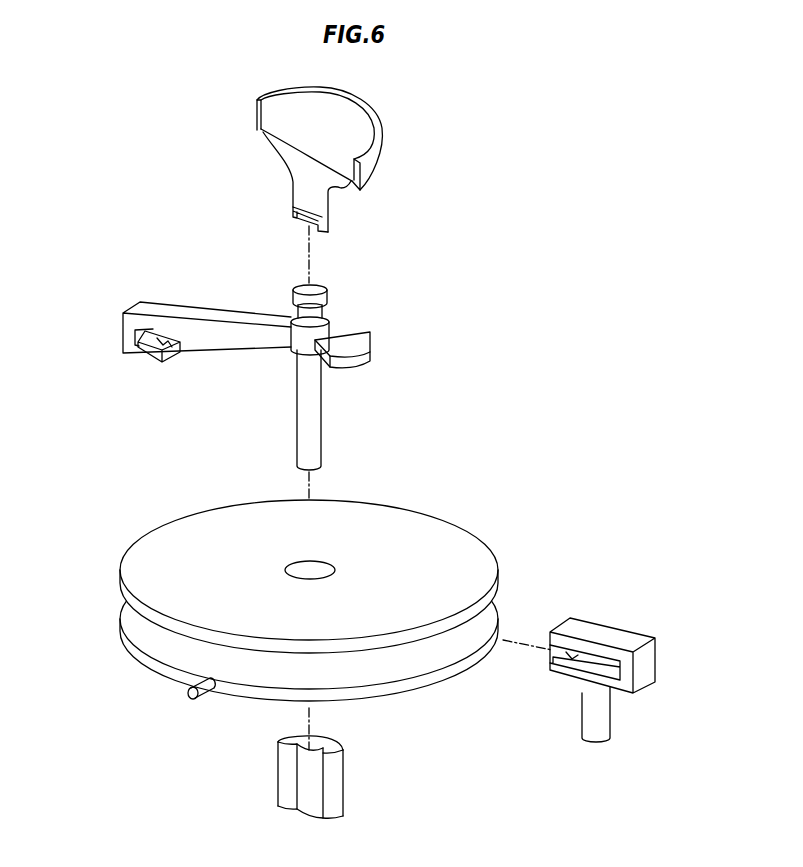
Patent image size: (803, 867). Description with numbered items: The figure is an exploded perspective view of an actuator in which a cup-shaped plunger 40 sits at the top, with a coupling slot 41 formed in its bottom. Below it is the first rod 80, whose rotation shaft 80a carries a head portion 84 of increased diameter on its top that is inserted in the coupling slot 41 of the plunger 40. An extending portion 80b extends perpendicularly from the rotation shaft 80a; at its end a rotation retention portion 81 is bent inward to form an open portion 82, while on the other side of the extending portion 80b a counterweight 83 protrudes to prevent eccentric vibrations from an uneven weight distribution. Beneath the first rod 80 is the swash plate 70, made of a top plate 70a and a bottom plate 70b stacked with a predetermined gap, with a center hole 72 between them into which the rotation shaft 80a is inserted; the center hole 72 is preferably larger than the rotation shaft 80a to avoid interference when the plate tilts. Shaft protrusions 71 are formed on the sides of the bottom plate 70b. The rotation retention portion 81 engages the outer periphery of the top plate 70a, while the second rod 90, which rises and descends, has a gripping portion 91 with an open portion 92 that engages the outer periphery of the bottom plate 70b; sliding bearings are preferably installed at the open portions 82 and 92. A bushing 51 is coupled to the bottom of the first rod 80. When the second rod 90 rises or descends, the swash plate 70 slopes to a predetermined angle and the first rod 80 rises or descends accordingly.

The plunger 40 is at (257, 113).
The coupling slot 41 is at (308, 223).
The head portion 84 is at (324, 294).
The first rod 80 is at (320, 327).
The rotation shaft 80a is at (317, 408).
The extending portion 80b is at (200, 315).
The counterweight 83 is at (360, 343).
The rotation retention portion 81 is at (130, 336).
The open portion 82 is at (178, 355).
The swash plate 70 is at (255, 600).
The top plate 70a is at (120, 571).
The bottom plate 70b is at (122, 632).
The center hole 72 is at (313, 573).
The shaft protrusion 71 is at (187, 693).
The gripping portion 91 is at (650, 660).
The open portion 92 is at (566, 655).
The second rod 90 is at (597, 717).
The bushing 51 is at (285, 775).